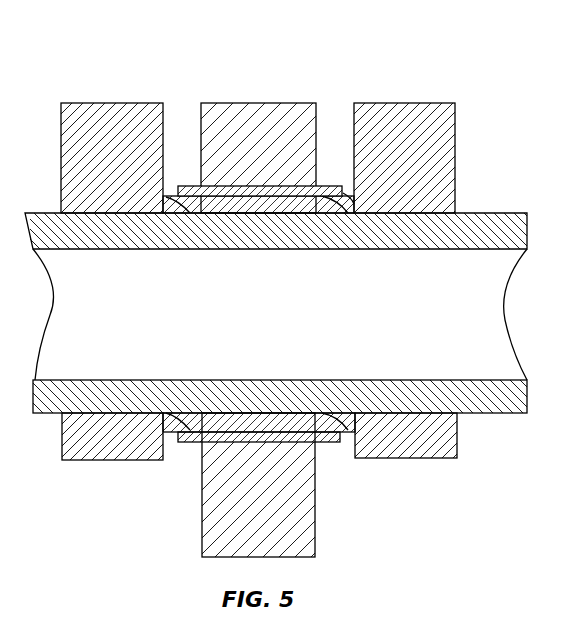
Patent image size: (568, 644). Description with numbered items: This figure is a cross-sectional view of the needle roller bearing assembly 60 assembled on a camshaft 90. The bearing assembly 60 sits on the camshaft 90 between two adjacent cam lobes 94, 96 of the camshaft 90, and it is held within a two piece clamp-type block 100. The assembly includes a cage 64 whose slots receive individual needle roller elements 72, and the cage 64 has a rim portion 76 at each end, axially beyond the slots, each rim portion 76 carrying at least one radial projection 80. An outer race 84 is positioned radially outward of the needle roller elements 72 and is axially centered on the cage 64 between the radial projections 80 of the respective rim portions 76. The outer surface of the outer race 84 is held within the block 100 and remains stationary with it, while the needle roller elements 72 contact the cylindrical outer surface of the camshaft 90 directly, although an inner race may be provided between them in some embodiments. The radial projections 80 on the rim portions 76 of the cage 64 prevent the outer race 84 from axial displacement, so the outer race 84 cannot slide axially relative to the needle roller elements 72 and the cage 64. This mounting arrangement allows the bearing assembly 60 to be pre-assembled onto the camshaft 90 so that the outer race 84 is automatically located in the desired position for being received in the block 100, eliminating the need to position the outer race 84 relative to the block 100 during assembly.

The needle roller bearing assembly 60 is at (336, 452).
The cage 64 is at (186, 206).
The needle roller elements 72 is at (262, 191).
The rim portion 76 is at (166, 418).
The radial projection 80 is at (176, 193).
The outer race 84 is at (248, 203).
The camshaft 90 is at (501, 151).
The cam lobe 94 is at (88, 113).
The cam lobe 96 is at (416, 115).
The block 100 is at (290, 112).